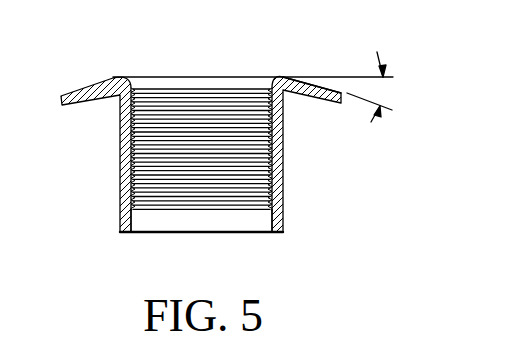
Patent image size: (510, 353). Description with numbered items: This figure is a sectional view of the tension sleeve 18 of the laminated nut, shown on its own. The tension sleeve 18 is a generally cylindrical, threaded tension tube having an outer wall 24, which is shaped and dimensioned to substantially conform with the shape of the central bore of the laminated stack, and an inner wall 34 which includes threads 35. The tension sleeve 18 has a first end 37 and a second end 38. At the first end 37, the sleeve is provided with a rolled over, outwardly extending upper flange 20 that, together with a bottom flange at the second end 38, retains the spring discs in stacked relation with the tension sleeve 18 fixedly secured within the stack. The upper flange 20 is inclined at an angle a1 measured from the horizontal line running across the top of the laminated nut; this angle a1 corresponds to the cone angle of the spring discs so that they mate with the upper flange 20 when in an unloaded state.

The tension sleeve 18 is at (120, 158).
The upper flange 20 is at (82, 86).
The outer wall 24 is at (284, 156).
The inner wall 34 is at (148, 102).
The threads 35 is at (242, 180).
The first end 37 is at (287, 77).
The second end 38 is at (127, 230).
The angle a1 is at (374, 87).